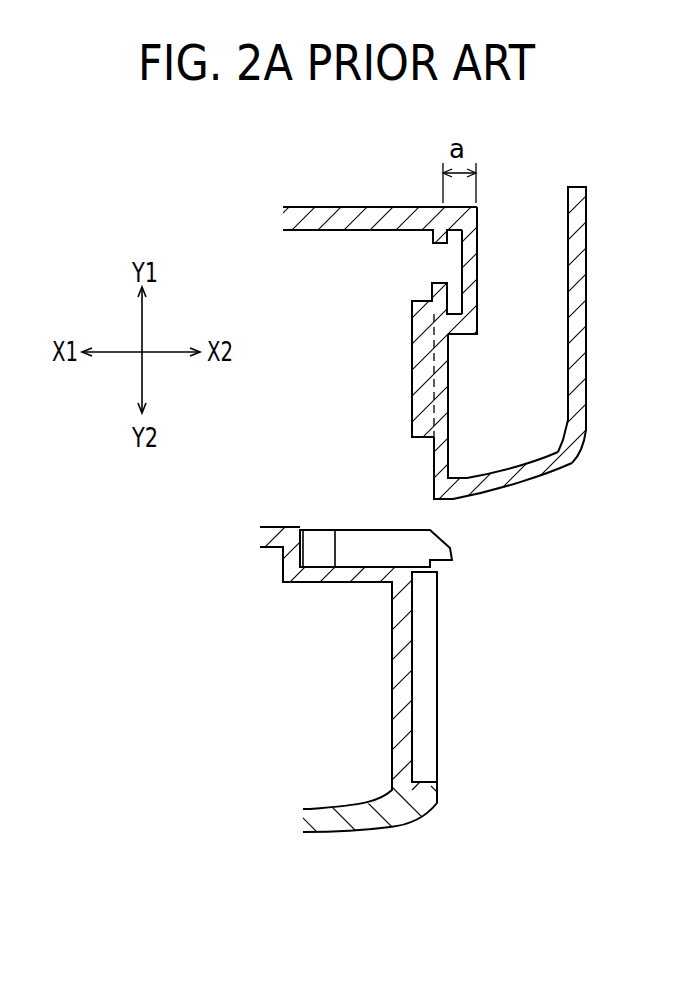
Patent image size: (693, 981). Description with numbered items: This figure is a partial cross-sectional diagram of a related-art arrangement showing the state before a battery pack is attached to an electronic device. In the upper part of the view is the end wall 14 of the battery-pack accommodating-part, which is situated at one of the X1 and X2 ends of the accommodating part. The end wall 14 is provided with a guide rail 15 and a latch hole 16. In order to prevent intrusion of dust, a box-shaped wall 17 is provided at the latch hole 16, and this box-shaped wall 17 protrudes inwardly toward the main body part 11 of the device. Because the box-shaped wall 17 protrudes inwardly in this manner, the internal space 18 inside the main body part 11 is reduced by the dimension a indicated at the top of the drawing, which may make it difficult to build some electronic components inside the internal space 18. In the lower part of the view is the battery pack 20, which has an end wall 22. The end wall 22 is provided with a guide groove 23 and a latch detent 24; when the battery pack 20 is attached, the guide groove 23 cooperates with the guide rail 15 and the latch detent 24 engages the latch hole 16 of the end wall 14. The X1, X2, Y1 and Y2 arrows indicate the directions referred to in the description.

The main body part 11 is at (587, 214).
The end wall 14 is at (432, 465).
The guide rail 15 is at (418, 367).
The latch hole 16 is at (437, 266).
The box-shaped wall 17 is at (477, 262).
The internal space 18 is at (542, 318).
The battery pack 20 is at (363, 831).
The end wall 22 is at (437, 699).
The guide groove 23 is at (427, 649).
The latch detent 24 is at (420, 543).